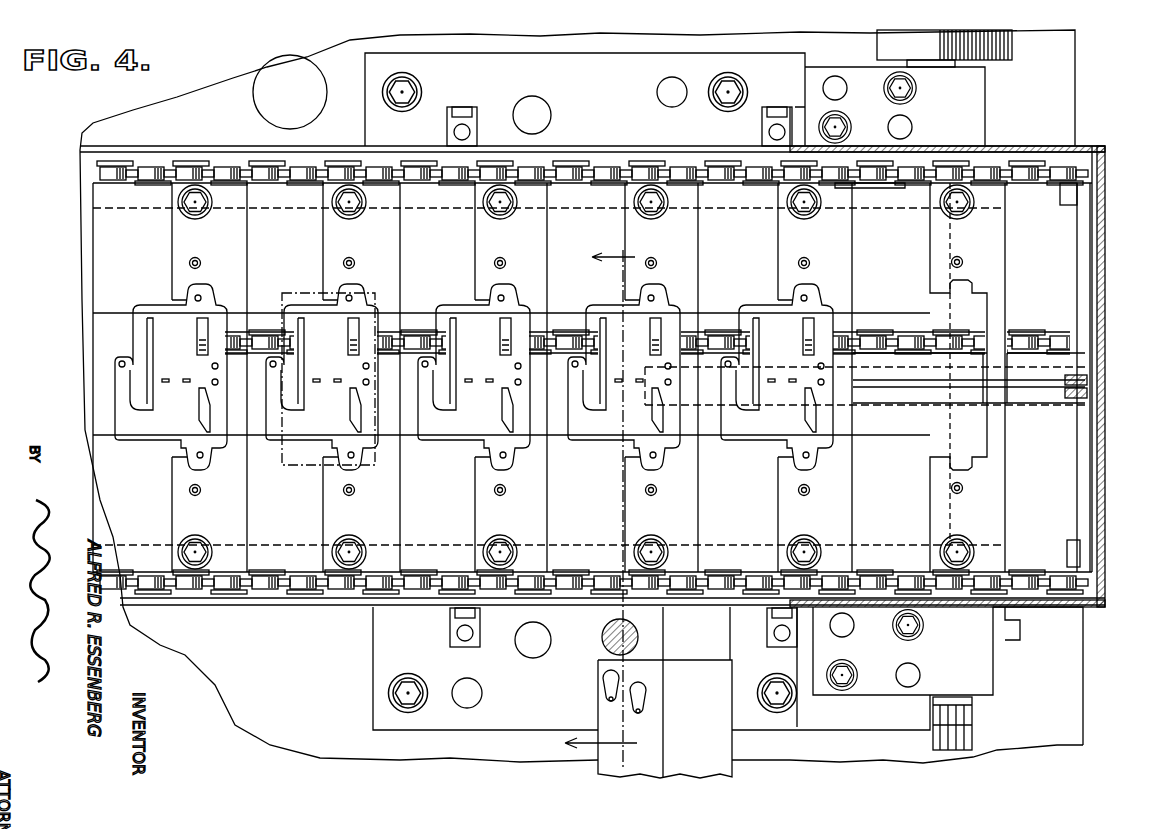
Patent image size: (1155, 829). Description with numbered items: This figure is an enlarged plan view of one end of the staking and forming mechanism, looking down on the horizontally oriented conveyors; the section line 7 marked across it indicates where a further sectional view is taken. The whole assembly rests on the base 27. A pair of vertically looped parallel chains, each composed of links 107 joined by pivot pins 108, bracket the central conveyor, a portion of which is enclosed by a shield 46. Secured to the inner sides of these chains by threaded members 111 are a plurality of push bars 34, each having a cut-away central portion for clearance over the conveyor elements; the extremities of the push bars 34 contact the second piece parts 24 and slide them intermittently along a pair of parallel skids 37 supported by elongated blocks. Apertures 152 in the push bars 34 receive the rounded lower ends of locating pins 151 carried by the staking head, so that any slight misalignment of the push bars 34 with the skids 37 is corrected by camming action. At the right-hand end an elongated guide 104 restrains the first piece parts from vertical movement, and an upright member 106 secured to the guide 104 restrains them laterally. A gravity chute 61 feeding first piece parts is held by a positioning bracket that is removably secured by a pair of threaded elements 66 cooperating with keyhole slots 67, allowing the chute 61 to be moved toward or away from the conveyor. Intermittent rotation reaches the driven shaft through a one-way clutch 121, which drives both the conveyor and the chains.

The oneway clutch 121 is at (997, 47).
The shield 46 is at (1107, 147).
The pivot pins 108 is at (828, 172).
The links 107 is at (855, 183).
The threaded members 111 is at (492, 203).
The push bars 34 is at (401, 252).
The locating pins 151 is at (345, 262).
The apertures 152 is at (352, 263).
The second piece part 24 is at (468, 425).
The skids 37 is at (930, 303).
The elongated guide 104 is at (1087, 381).
The upright member 106 is at (1085, 395).
The base 27 is at (1075, 685).
The gravity chute 61 is at (720, 744).
The threaded elements 66 is at (630, 716).
The keyhole slots 67 is at (620, 675).
The section line 7- 7 is at (601, 503).